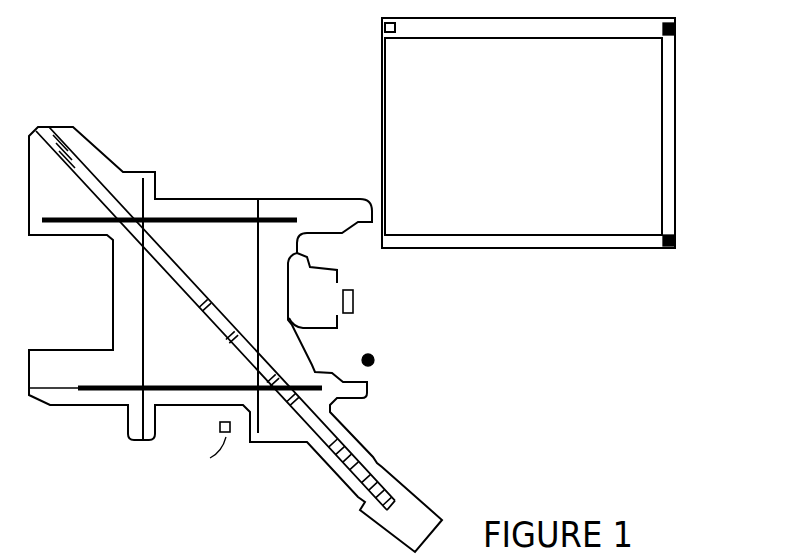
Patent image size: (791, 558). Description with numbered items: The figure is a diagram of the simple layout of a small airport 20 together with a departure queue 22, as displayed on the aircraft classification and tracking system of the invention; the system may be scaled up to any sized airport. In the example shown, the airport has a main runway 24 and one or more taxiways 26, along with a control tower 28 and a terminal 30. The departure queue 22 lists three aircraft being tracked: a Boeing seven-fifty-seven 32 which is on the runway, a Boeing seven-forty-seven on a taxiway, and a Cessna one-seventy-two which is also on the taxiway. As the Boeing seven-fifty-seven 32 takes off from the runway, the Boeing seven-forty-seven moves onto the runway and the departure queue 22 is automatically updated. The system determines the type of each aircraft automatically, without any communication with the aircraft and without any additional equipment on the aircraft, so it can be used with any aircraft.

The airport 20 is at (374, 358).
The departure queue 22 is at (675, 73).
The main runway 24 is at (356, 493).
The taxiways 26 is at (258, 248).
The control tower 28 is at (228, 433).
The terminal 30 is at (351, 312).
The Boeing 757 (B757) 32 is at (300, 388).